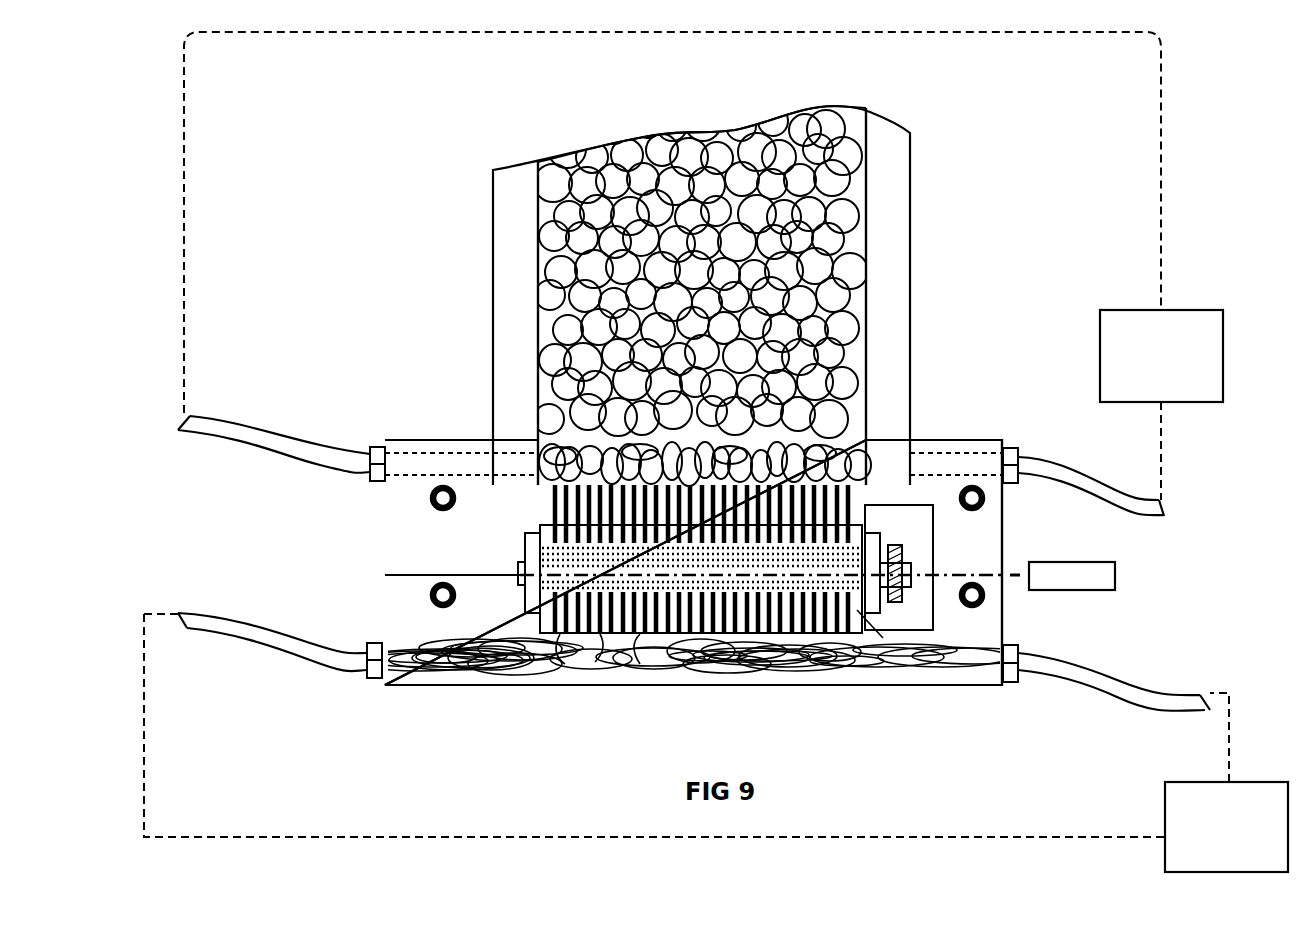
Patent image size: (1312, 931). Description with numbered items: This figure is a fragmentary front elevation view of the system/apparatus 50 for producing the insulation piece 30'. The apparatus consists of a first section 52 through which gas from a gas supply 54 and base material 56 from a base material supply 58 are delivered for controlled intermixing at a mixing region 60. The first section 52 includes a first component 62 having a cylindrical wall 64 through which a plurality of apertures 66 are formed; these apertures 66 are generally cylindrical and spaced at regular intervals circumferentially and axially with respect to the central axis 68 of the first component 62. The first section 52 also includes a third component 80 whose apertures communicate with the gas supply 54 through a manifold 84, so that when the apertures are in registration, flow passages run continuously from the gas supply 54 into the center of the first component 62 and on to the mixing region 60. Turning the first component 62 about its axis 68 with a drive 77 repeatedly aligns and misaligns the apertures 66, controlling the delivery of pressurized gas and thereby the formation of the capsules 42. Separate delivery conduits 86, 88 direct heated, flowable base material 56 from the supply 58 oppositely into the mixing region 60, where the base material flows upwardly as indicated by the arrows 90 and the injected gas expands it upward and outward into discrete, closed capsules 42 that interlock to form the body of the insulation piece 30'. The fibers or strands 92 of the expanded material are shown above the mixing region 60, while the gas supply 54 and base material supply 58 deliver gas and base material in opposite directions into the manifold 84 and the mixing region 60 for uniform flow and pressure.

The insulation piece 30' is at (702, 116).
The fibers of base material 92 is at (840, 100).
The capsules 42 is at (866, 137).
The system/apparatus 50 is at (925, 297).
The arrows 90 is at (745, 377).
The mixing region 60 is at (832, 434).
The delivery conduit 86 is at (1048, 467).
The central axis 68 is at (505, 577).
The delivery conduit 88 is at (313, 456).
The base material 56 is at (540, 520).
The apertures 66 is at (818, 590).
The cylindrical wall 64 is at (853, 592).
The first component 62 is at (900, 665).
The third component 80 is at (857, 612).
The manifold 84 is at (933, 677).
The first section 52 is at (1100, 609).
The drive 77 is at (817, 573).
The base material supply 58 is at (1161, 356).
The gas supply 54 is at (1226, 827).